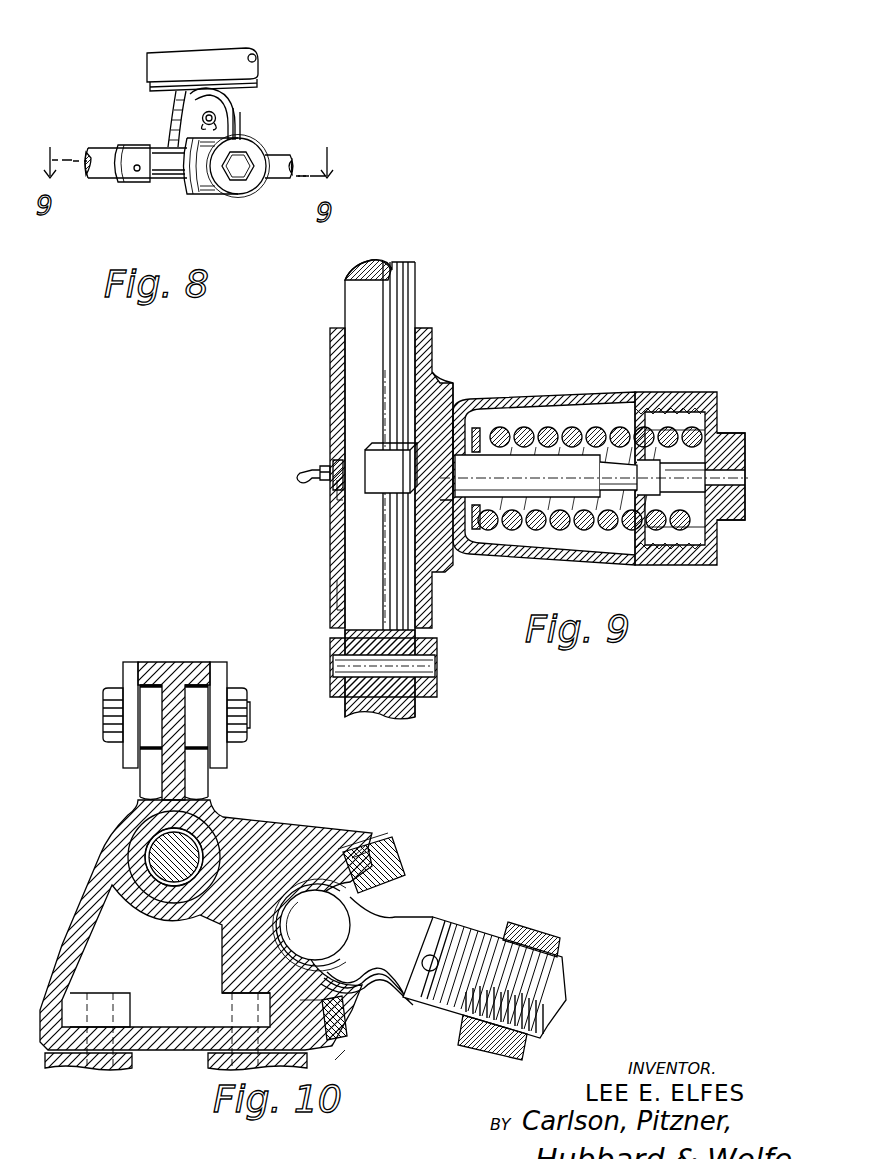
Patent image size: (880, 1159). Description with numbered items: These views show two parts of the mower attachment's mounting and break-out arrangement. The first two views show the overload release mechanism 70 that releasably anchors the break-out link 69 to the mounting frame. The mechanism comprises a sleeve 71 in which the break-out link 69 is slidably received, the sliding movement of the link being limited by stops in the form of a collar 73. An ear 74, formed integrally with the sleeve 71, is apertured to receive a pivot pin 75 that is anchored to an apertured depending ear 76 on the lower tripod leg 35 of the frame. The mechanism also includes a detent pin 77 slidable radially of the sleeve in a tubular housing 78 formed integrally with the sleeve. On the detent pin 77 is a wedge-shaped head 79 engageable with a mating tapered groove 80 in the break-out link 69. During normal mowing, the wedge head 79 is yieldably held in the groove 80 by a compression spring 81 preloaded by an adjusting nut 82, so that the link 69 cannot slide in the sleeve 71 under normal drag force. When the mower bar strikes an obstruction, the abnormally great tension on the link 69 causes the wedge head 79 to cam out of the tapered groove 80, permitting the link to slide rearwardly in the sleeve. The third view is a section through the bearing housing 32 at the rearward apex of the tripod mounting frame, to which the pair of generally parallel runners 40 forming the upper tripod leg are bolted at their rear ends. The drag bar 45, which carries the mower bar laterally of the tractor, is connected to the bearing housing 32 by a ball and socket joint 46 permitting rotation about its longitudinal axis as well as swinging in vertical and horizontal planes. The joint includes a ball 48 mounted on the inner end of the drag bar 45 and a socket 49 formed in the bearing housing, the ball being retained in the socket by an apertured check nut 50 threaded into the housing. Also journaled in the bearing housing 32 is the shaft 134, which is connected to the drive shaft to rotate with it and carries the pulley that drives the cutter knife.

In FIG. 8, the lower tripod leg 35 is at (206, 58).
In FIG. 8, the depending ear 76 is at (222, 91).
In FIG. 8, the pivot pin 75 is at (203, 117).
In FIG. 8, the ear 74 is at (230, 130).
In FIG. 8, the break-out link 69 is at (108, 152).
In FIG. 9, the break-out link 69 is at (398, 300).
In FIG. 8, the collar 73 is at (136, 184).
In FIG. 9, the collar 73 is at (438, 682).
In FIG. 8, the sleeve 71 is at (168, 182).
In FIG. 9, the sleeve 71 is at (425, 360).
In FIG. 8, the overload release mechanism 70 is at (214, 197).
In FIG. 9, the overload release mechanism 70 is at (637, 392).
In FIG. 8, the adjusting nut 82 is at (236, 176).
In FIG. 9, the adjusting nut 82 is at (722, 508).
In FIG. 9, the wedge-shaped head 79 is at (448, 436).
In FIG. 9, the tapered groove 80 is at (386, 494).
In FIG. 9, the tubular housing 78 is at (580, 396).
In FIG. 9, the compression spring 81 is at (588, 528).
In FIG. 9, the detent pin 77 is at (518, 460).
In FIG. 10, the bearing housing 32 is at (300, 817).
In FIG. 10, the runners 40 is at (222, 668).
In FIG. 10, the shaft 134 is at (160, 848).
In FIG. 10, the apertured check nut 50 is at (395, 853).
In FIG. 10, the socket 49 is at (288, 912).
In FIG. 10, the ball 48 is at (365, 912).
In FIG. 10, the ball and socket joint 46 is at (440, 917).
In FIG. 10, the drag bar 45 is at (555, 940).